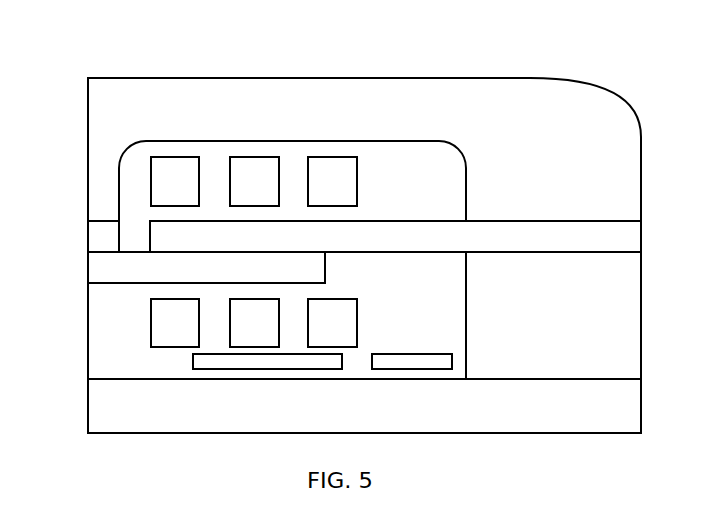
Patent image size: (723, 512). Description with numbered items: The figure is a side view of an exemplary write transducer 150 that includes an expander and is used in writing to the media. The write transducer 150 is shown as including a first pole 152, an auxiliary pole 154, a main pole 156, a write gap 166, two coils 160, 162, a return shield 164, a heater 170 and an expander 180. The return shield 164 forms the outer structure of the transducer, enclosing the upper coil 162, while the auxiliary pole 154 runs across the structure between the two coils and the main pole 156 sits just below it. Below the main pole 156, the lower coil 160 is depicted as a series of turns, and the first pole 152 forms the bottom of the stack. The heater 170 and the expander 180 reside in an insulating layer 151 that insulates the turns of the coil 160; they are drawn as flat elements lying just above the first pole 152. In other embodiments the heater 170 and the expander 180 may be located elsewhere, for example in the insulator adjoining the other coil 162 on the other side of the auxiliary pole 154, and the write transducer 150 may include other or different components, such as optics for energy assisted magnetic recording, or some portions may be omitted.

The write transducer 150 is at (362, 34).
The insulating layer 151 is at (88, 310).
The first pole 152 is at (88, 402).
The auxiliary pole 154 is at (578, 221).
The main pole 156 is at (88, 268).
The coil 160 is at (385, 311).
The coil 162 is at (386, 184).
The return shield 164 is at (88, 157).
The write gap 166 is at (103, 220).
The heater 170 is at (437, 370).
The expander 180 is at (190, 369).